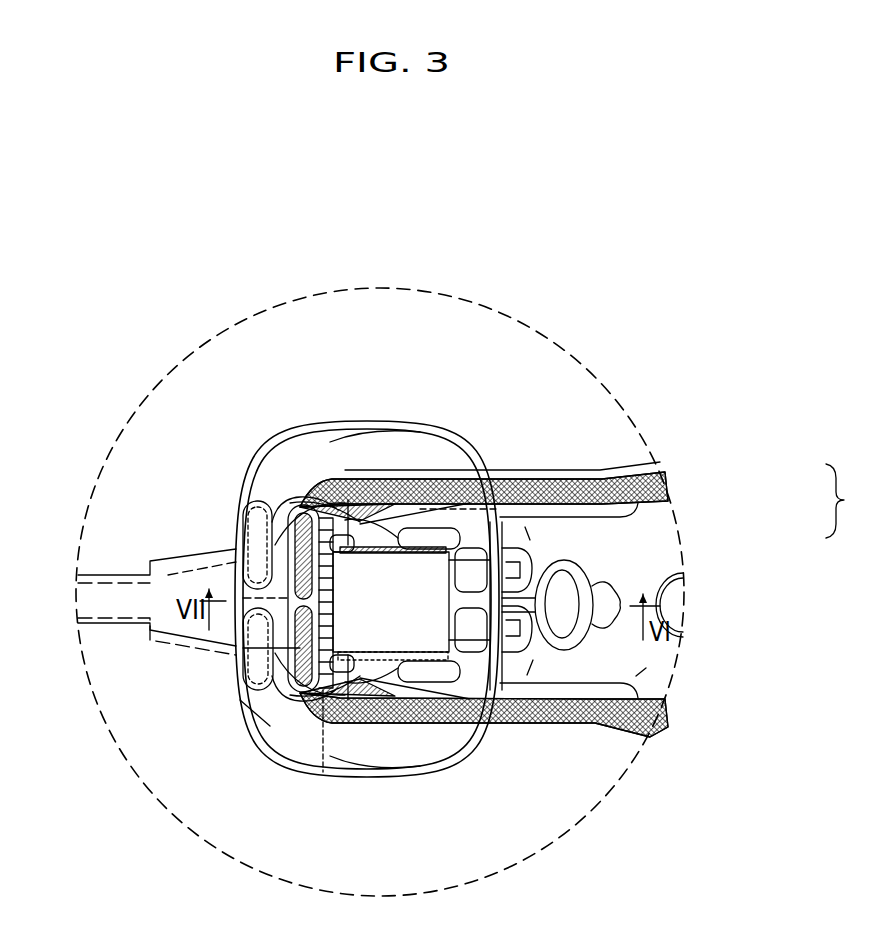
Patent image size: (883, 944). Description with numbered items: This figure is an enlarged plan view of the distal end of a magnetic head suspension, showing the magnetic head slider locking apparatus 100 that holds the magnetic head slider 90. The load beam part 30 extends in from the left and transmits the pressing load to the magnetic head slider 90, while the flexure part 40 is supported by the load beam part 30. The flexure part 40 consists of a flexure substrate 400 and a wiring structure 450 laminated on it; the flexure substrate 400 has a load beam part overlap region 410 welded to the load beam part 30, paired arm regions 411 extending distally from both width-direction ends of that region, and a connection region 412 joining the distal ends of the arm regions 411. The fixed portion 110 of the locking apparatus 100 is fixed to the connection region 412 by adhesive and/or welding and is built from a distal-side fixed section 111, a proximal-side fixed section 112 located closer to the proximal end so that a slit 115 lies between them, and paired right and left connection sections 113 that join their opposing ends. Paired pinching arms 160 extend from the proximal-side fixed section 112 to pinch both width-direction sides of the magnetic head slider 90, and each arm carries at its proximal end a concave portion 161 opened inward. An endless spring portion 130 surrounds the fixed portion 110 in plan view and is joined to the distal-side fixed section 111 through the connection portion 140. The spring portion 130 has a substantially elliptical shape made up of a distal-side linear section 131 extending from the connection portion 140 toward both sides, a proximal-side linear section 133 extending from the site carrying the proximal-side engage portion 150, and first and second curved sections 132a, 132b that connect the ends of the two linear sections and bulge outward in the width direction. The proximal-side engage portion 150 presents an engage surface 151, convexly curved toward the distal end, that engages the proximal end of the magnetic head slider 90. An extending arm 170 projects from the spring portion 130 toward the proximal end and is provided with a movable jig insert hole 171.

The load beam part 30 is at (178, 652).
The flexure part 40 is at (848, 501).
The magnetic head slider 90 is at (391, 602).
The magnetic head slider locking apparatus 100 is at (370, 388).
The fixed portion 110 is at (303, 500).
The distal-side fixed section 111 is at (273, 540).
The proximal-side fixed section 112 is at (323, 772).
The connection sections 113 is at (308, 506).
The slit 115 is at (262, 652).
The spring portion 130 is at (275, 440).
The distal-side linear section 131 is at (245, 565).
The first curved section 132a is at (395, 422).
The second curved section 132b is at (380, 778).
The proximal-side linear section 133 is at (520, 578).
The connection portion 140 is at (236, 598).
The proximal-side engage portion 150 is at (468, 600).
The engage surface 151 is at (462, 600).
The pinching arms 160 is at (397, 545).
The concave portion 161 is at (351, 520).
The extending arm 170 is at (559, 658).
The movable jig insert hole 171 is at (553, 588).
The flexure substrate 400 is at (647, 540).
The load beam part overlap region 410 is at (646, 668).
The arm regions 411 is at (523, 527).
The connection region 412 is at (270, 726).
The wiring structure 450 is at (670, 491).